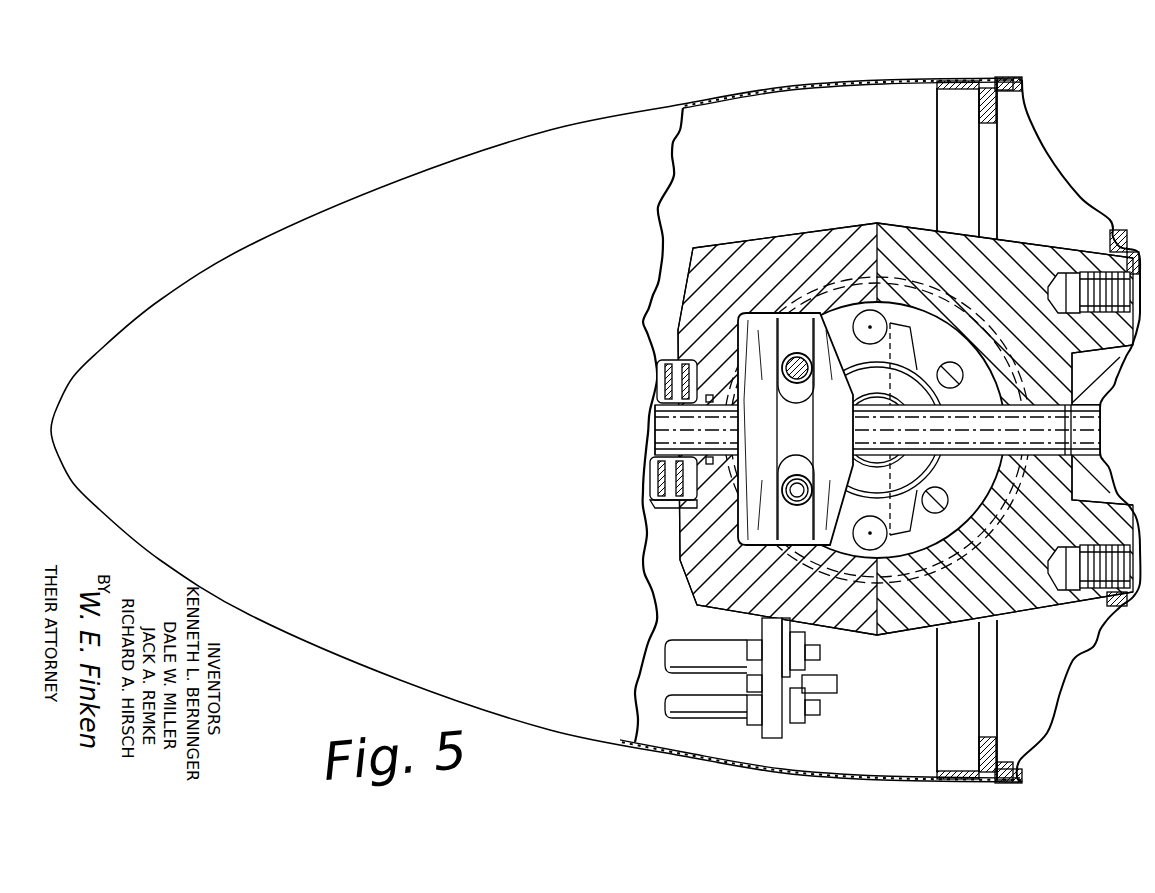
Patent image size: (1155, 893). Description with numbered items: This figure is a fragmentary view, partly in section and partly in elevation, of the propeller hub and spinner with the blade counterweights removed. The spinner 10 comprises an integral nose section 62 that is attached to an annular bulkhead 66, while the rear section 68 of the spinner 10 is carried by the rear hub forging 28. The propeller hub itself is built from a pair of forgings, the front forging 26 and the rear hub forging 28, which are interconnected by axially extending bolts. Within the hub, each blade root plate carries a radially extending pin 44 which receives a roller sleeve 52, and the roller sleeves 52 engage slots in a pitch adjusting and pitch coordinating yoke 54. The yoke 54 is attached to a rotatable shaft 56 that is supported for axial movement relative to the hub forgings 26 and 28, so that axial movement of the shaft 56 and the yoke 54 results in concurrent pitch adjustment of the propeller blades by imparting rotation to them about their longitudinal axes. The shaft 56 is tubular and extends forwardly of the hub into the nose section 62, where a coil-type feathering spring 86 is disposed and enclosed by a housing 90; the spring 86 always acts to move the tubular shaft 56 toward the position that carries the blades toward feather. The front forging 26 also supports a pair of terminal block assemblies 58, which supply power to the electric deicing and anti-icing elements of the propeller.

The spinner 10 is at (633, 106).
The nose section 62 is at (784, 96).
The rear section 68 is at (1020, 83).
The annular bulkhead 66 is at (998, 113).
The front forging 26 is at (758, 248).
The rear hub forging 28 is at (903, 230).
The pin 44 is at (781, 368).
The roller sleeve 52 is at (800, 452).
The pitch adjusting and pitch coordinating yoke 54 is at (757, 510).
The shaft 56 is at (672, 432).
The feathering spring 86 is at (653, 482).
The housing 90 is at (656, 512).
The terminal block assembly 58 is at (773, 730).